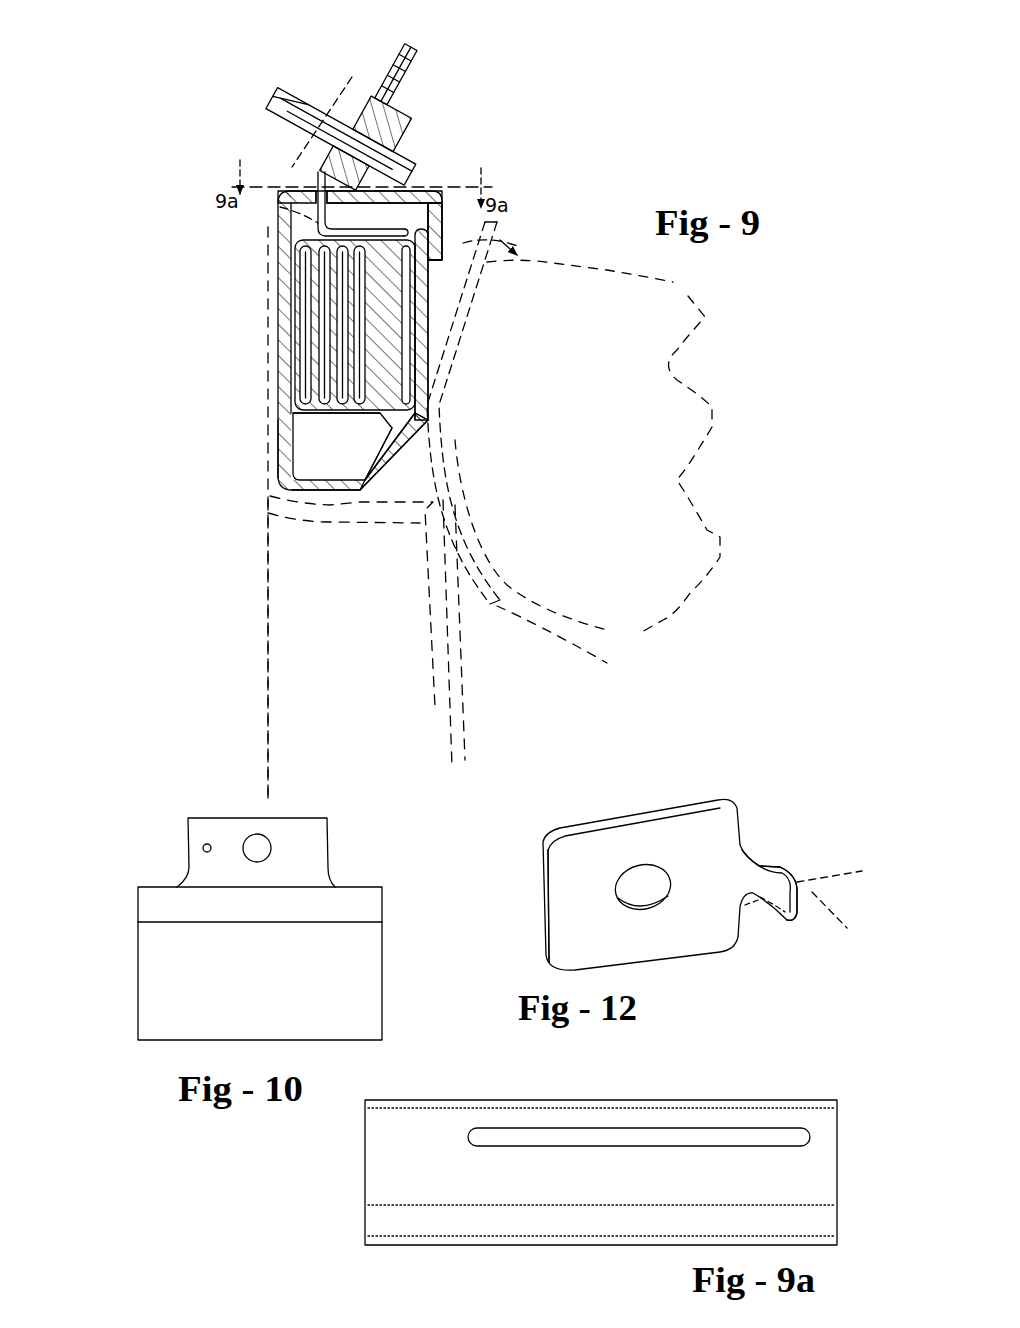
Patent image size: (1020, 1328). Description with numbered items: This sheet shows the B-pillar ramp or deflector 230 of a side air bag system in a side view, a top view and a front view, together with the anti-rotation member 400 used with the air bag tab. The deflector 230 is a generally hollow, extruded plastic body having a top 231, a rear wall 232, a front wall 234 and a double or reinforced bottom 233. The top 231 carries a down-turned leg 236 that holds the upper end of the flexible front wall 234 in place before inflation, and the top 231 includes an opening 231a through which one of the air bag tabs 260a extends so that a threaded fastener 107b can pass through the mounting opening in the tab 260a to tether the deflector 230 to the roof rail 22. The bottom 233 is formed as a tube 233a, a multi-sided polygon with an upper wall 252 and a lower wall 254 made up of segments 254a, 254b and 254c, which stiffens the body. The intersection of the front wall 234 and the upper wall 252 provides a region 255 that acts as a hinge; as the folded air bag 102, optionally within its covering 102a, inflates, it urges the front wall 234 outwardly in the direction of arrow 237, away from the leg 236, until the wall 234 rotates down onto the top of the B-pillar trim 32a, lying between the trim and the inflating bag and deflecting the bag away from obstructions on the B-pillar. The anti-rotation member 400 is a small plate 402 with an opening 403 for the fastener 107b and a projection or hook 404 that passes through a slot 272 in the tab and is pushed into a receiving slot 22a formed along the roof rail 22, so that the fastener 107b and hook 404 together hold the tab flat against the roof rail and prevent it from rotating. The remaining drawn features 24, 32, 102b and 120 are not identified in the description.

In FIG. 9, the roof rail 22 is at (352, 83).
In FIG. 12, the roof rail 22 is at (803, 906).
In FIG. 12, the receiving slot 22a is at (800, 925).
In FIG. 9, the seat cushion 24 is at (267, 673).
In FIG. 9, the trim cover 32 is at (430, 648).
In FIG. 9, the B-pillar trim 32a is at (465, 655).
In FIG. 9, the air bag 102 is at (417, 350).
In FIG. 9, the covering 102a is at (278, 265).
In FIG. 9, the frame second surface 102b is at (280, 207).
In FIG. 9, the threaded fastener 107b is at (446, 183).
In FIG. 9, the thermoelectric device 120 is at (380, 314).
In FIG. 9, the deflector 230 is at (398, 188).
In FIG. 10, the deflector 230 is at (362, 885).
In FIG. 9, the top 231 is at (300, 181).
In FIG. 9, the opening 231a is at (305, 181).
In FIG. 9a, the opening 231a is at (738, 1135).
In FIG. 9, the rear wall 232 is at (298, 361).
In FIG. 9, the bottom 233 is at (382, 462).
In FIG. 9, the tube 233a is at (313, 443).
In FIG. 9, the front wall 234 is at (428, 280).
In FIG. 10, the front wall 234 is at (165, 952).
In FIG. 9, the down-turned leg 236 is at (436, 222).
In FIG. 9, the arrow 237 is at (520, 233).
In FIG. 9, the upper wall 252 is at (381, 458).
In FIG. 9, the lower wall 254 is at (333, 493).
In FIG. 9, the segment 254a is at (380, 472).
In FIG. 9, the segment 254b is at (352, 432).
In FIG. 9, the segment 254c is at (283, 448).
In FIG. 9, the hinge region 255 is at (421, 423).
In FIG. 9, the air bag tab 260a is at (410, 57).
In FIG. 10, the air bag tab 260a is at (208, 870).
In FIG. 12, the slot 272 is at (790, 873).
In FIG. 12, the anti-rotation member 400 is at (590, 823).
In FIG. 12, the plate 402 is at (562, 900).
In FIG. 12, the opening 403 is at (655, 902).
In FIG. 12, the hook 404 is at (788, 863).